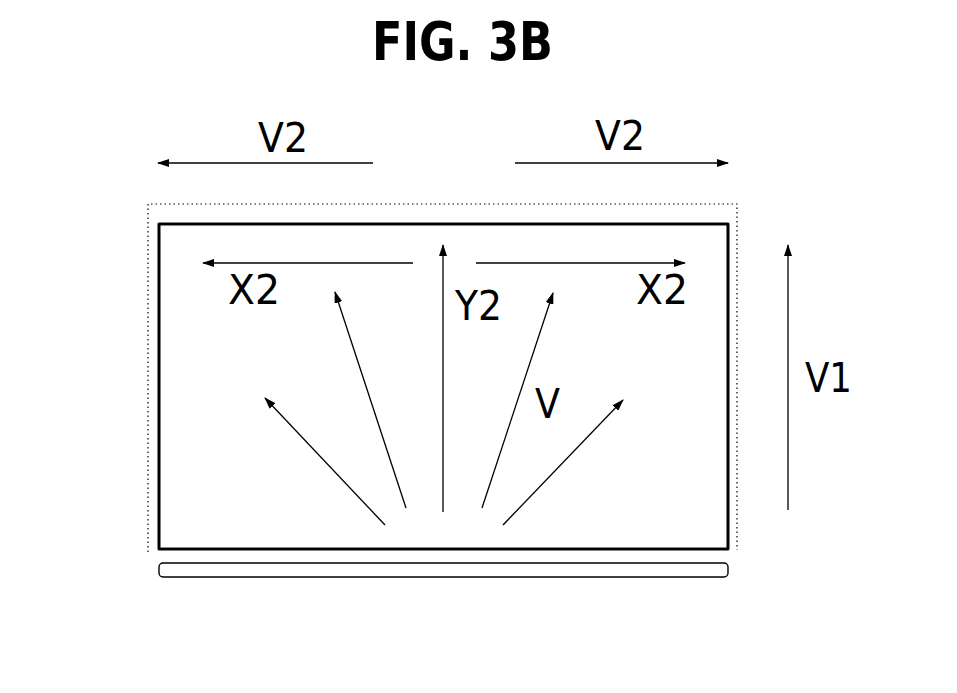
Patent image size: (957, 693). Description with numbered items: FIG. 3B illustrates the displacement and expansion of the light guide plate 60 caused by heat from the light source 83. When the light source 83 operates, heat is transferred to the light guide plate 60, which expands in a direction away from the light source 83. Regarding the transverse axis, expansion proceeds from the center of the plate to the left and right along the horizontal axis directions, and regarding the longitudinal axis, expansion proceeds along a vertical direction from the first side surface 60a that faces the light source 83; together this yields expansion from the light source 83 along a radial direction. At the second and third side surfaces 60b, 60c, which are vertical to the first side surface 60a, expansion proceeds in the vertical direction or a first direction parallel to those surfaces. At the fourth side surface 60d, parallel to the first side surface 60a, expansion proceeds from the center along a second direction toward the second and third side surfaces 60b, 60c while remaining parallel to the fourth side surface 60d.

The light guide plate 60 is at (209, 532).
The first side surface 60a is at (693, 549).
The second side surface 60b is at (159, 298).
The third side surface 60c is at (730, 245).
The fourth side surface 60d is at (410, 224).
The light source 83 is at (515, 570).